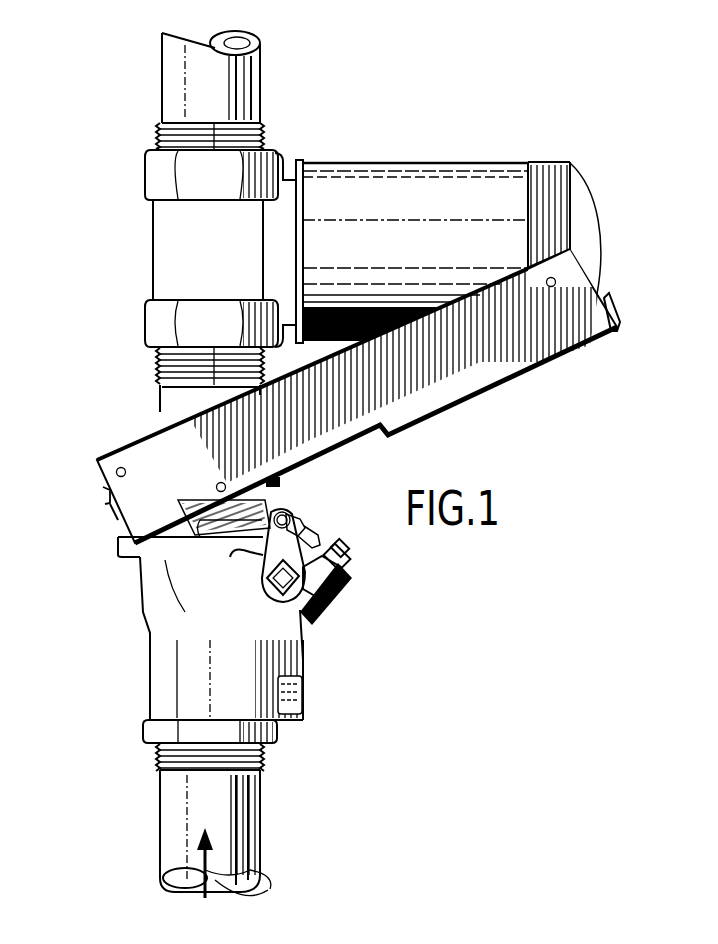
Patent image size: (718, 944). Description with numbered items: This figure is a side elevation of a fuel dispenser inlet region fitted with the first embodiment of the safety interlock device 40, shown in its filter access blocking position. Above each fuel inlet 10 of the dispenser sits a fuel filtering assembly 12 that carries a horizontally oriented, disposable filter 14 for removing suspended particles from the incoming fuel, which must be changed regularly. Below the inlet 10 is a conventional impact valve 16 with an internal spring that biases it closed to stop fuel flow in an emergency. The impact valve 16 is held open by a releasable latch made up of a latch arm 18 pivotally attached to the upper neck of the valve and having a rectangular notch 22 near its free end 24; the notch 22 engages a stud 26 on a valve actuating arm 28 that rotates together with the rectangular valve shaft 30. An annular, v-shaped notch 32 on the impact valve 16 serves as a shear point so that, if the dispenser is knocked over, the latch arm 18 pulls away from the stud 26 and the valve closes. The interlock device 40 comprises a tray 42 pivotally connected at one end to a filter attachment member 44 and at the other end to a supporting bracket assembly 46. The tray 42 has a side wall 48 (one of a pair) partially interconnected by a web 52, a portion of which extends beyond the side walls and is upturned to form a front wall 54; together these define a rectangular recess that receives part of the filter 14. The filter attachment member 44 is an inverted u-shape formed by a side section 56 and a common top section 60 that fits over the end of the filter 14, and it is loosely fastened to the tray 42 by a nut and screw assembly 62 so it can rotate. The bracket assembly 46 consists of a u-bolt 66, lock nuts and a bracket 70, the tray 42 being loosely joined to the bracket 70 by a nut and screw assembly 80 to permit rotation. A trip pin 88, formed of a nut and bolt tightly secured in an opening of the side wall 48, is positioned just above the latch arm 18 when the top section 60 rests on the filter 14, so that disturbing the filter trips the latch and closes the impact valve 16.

The fuel inlet 10 is at (149, 377).
The fuel filtering assembly 12 is at (151, 247).
The disposable filter 14 is at (420, 219).
The impact valve 16 is at (147, 680).
The latch arm 18 is at (228, 540).
The rectangular notch 22 is at (285, 515).
The free end 24 is at (315, 540).
The stud 26 is at (302, 524).
The valve actuating arm 28 is at (268, 575).
The rectangular valve shaft 30 is at (322, 603).
The annular v-shaped shear notch 32 is at (187, 528).
The safety interlock device 40 is at (366, 397).
The tray 42 is at (574, 366).
The filter attachment member 44 is at (577, 205).
The supporting bracket assembly 46 is at (101, 492).
The side wall 48 is at (462, 320).
The web 52 is at (460, 402).
The front wall 54 is at (616, 312).
The side section 56 is at (545, 215).
The top section 60 is at (546, 160).
The nut and screw assembly 62 is at (556, 281).
The u-bolt 66 is at (283, 485).
The bracket 70 is at (108, 510).
The nut and screw assembly 80 is at (118, 468).
The trip pin 88 is at (217, 484).